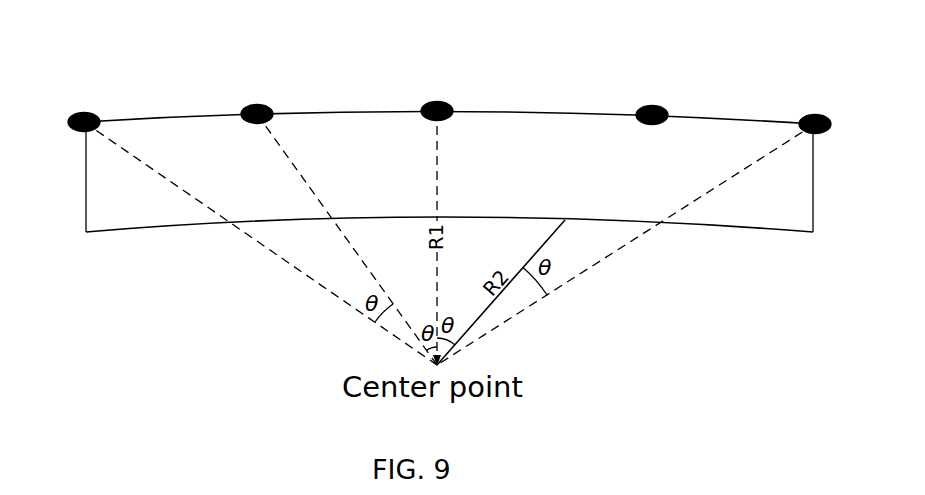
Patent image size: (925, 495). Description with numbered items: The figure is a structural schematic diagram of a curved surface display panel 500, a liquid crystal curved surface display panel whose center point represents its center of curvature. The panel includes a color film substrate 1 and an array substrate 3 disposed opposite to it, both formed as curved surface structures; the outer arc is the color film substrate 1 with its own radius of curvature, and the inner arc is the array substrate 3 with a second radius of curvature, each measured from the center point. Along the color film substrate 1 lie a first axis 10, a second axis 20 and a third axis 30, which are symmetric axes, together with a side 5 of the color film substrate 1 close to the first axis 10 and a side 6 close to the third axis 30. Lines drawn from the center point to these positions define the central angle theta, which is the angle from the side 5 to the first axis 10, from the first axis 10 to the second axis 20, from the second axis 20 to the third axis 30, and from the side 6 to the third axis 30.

The curved surface display panel 500 is at (807, 50).
The color film substrate 1 is at (185, 117).
The array substrate 3 is at (173, 225).
The side of the color film substrate 5 is at (80, 110).
The side of the color film substrate 6 is at (808, 116).
The first axis 10 is at (253, 104).
The second axis 20 is at (435, 101).
The third axis 30 is at (645, 106).